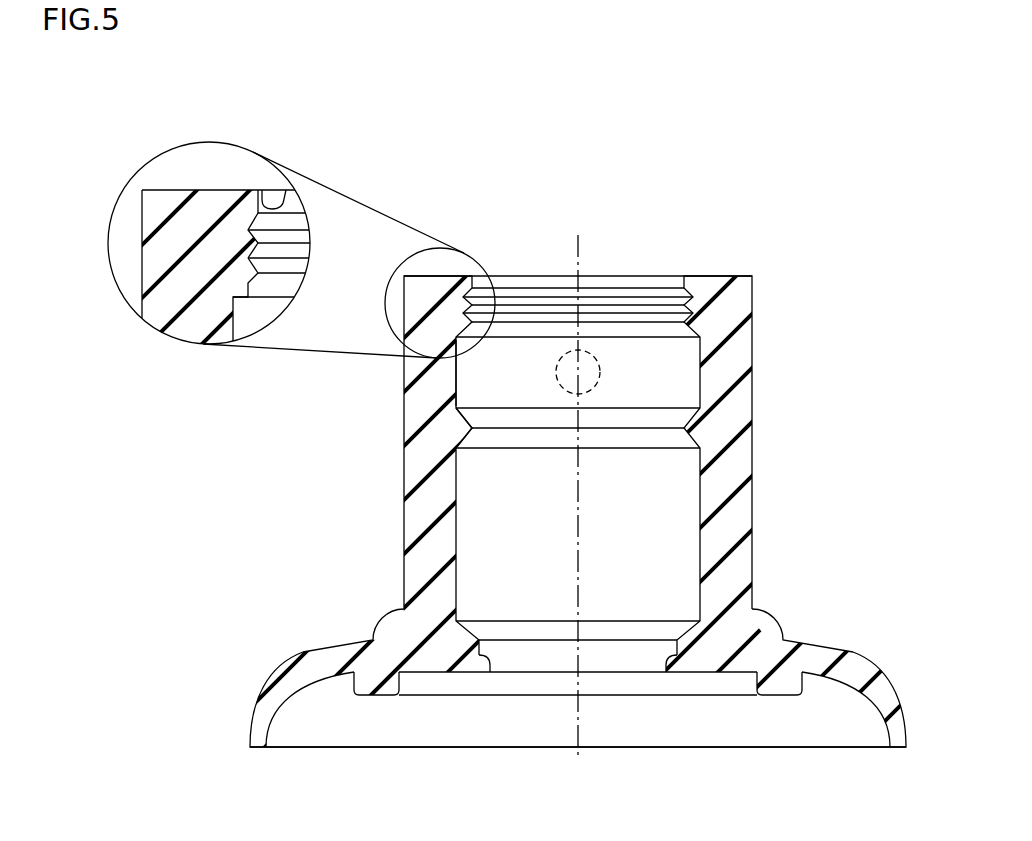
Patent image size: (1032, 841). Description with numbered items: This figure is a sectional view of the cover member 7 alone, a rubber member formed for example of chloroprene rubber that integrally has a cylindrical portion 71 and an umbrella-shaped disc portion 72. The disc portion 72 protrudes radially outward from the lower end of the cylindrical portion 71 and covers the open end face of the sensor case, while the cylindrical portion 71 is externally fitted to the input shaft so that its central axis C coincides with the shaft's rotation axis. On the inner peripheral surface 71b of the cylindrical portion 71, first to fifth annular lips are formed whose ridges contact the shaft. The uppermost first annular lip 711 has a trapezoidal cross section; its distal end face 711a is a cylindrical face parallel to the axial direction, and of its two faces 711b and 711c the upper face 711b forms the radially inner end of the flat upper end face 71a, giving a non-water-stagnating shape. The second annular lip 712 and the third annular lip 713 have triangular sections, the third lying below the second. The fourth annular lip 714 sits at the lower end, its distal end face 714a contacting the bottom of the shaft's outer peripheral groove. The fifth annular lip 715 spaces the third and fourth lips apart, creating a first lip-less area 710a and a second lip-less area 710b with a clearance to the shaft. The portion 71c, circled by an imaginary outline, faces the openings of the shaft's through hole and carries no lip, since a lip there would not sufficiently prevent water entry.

The cover member 7 is at (826, 530).
The cylindrical portion 71 is at (752, 572).
The disc portion 72 is at (783, 637).
The upper end face 71a is at (430, 277).
The inner peripheral surface 71b is at (460, 383).
The portion facing the openings 71c is at (587, 357).
The first lip-less area 710a is at (675, 390).
The second lip-less area 710b is at (667, 508).
The first annular lip 711 is at (248, 218).
The distal end face 711a is at (283, 204).
The upper face 711b is at (248, 190).
The lower face 711c is at (267, 227).
The second annular lip 712 is at (250, 242).
The third annular lip 713 is at (250, 272).
The fourth annular lip 714 is at (470, 643).
The distal end face 714a is at (490, 662).
The fifth annular lip 715 is at (462, 428).
The central axis C is at (578, 245).